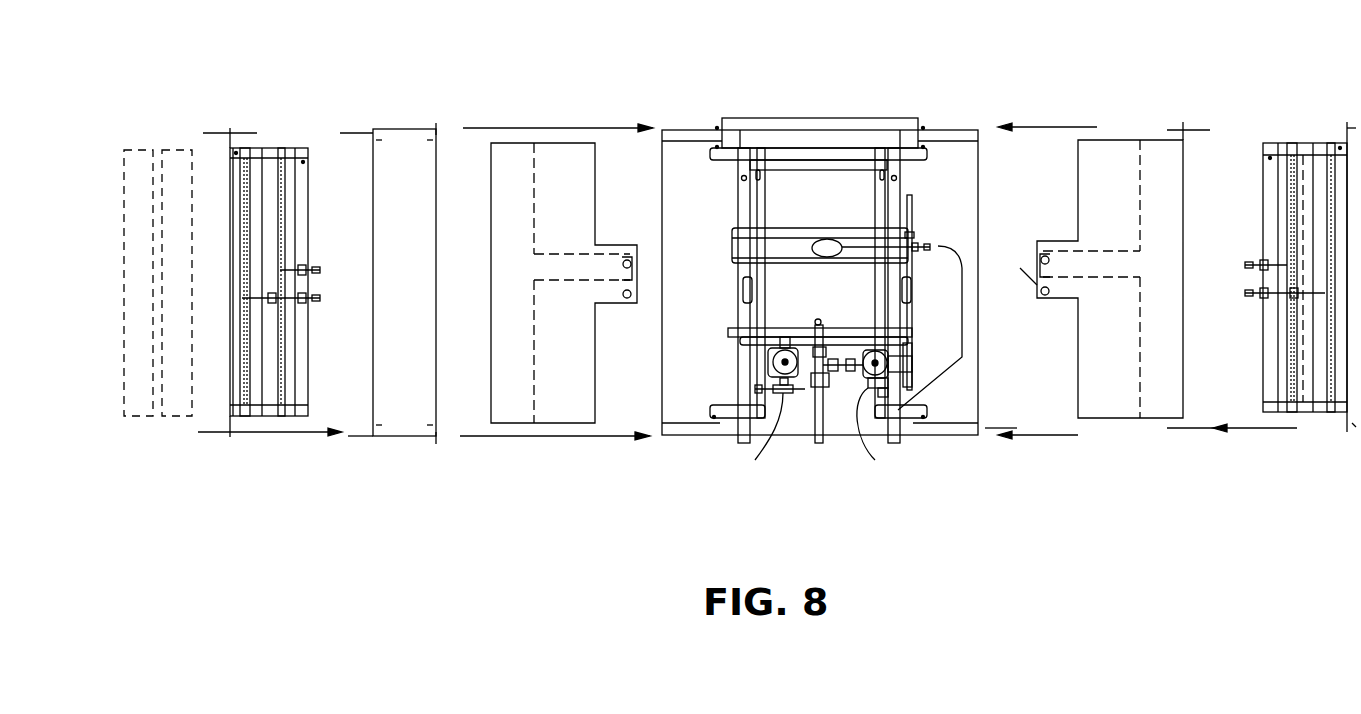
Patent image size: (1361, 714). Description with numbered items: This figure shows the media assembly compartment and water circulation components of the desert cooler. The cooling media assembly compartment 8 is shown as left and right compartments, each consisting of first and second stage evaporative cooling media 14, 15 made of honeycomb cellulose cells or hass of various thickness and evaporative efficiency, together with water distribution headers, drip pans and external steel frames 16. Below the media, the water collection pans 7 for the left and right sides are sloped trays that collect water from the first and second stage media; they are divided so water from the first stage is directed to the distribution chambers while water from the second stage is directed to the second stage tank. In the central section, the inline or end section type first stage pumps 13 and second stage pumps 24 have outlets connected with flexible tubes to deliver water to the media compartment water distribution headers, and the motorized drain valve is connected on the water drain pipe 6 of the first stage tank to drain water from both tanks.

The water drain pipe 6 is at (813, 443).
The water collection pans 7 is at (557, 423).
The cooling media assembly compartment 8 is at (255, 416).
The first stage pumps 13 is at (772, 430).
The first stage evaporative cooling media 14 is at (137, 148).
The second stage evaporative cooling media 15 is at (177, 148).
The frame rail 16 is at (220, 133).
The second stage pumps 24 is at (855, 432).